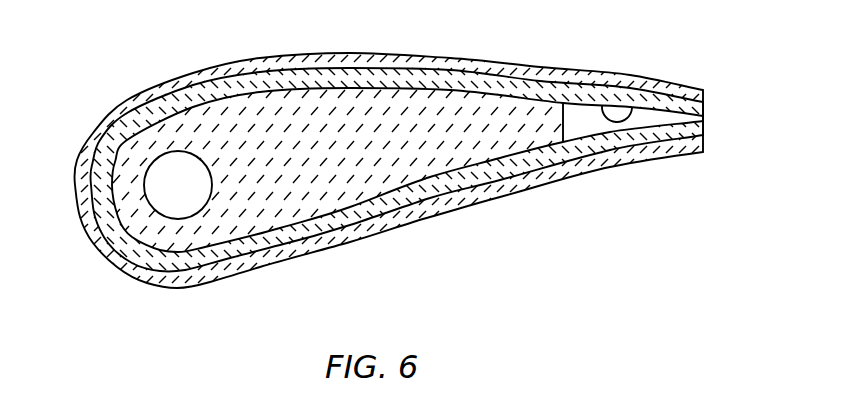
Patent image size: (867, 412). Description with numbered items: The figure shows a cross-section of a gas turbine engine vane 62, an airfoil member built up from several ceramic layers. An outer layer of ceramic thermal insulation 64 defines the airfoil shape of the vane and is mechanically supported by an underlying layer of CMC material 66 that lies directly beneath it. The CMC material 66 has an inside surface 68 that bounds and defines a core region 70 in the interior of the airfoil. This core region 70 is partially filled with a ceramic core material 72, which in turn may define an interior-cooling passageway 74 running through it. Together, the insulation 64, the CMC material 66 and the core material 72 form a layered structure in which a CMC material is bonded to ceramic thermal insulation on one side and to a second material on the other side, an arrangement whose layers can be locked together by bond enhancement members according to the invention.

The gas turbine engine vane 62 is at (110, 53).
The outer layer of ceramic thermal insulation 64 is at (398, 63).
The layer of CMC material 66 is at (502, 88).
The inside surface 68 is at (632, 113).
The core region 70 is at (582, 120).
The ceramic core material 72 is at (382, 158).
The interior-cooling passageway 74 is at (163, 201).